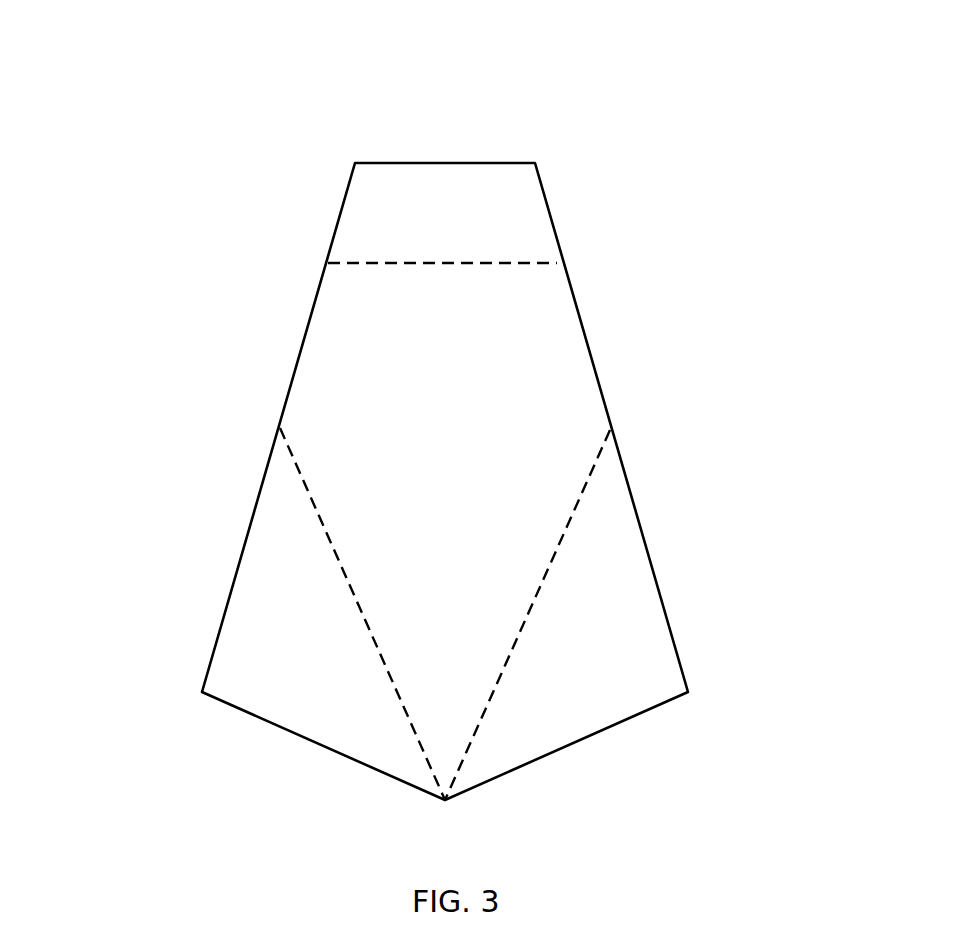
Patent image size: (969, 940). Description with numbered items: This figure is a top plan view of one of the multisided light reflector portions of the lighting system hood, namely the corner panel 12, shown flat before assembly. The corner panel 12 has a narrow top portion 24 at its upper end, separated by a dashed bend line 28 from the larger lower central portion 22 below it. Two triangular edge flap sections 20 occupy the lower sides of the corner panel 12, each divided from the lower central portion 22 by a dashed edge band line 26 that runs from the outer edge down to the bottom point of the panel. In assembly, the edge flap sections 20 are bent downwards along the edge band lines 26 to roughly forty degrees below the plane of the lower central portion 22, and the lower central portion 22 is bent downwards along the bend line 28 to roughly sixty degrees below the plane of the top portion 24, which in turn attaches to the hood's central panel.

The corner panel 12 is at (636, 209).
The edge flap sections 20 is at (449, 649).
The lower central portion 22 is at (433, 433).
The top portion 24 is at (425, 206).
The edge band lines 26 is at (333, 552).
The bend line 28 is at (430, 258).